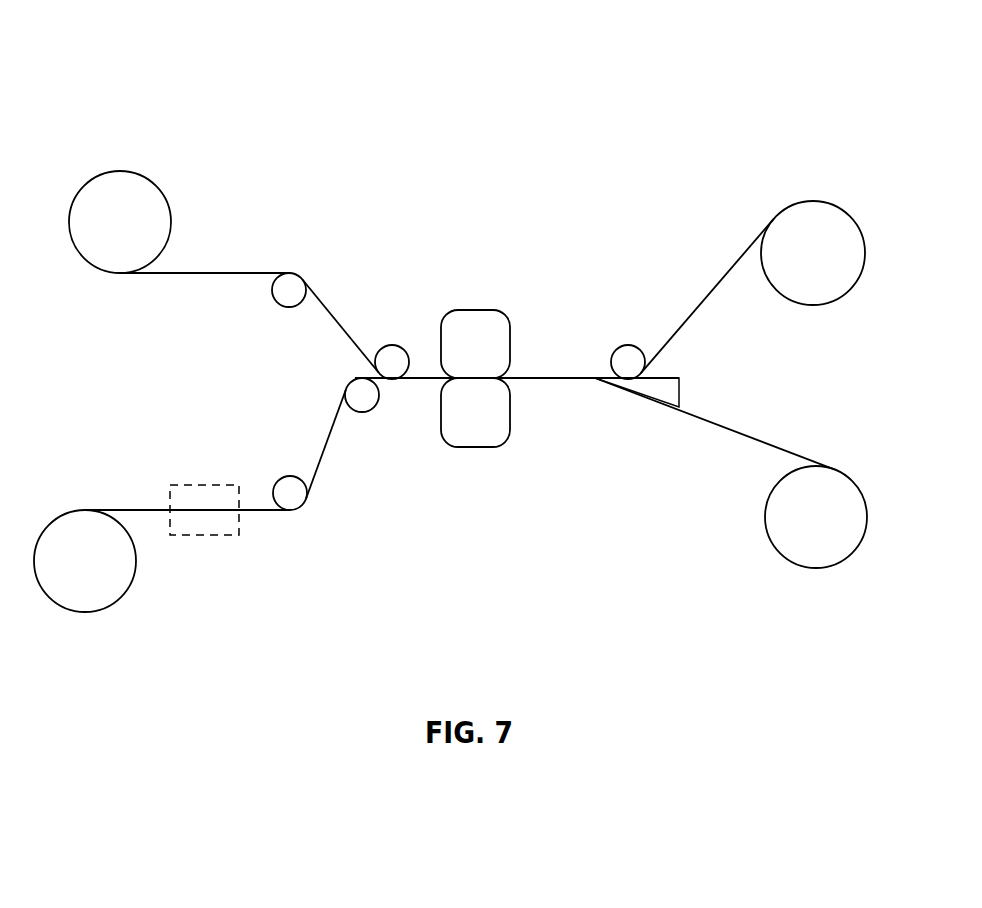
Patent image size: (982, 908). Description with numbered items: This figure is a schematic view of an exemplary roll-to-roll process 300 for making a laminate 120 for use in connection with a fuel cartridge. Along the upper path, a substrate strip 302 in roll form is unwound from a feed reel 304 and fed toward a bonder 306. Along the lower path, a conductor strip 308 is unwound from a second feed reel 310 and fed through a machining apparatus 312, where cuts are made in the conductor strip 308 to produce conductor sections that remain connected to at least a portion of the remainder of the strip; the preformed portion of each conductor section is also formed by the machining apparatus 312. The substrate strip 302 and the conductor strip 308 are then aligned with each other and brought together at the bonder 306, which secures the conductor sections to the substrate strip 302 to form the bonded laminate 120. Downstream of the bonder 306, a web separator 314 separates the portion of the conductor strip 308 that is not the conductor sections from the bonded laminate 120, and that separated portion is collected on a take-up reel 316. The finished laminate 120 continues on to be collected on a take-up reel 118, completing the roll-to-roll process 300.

The roll-to-roll process 300 is at (614, 62).
The feed reel 304 is at (165, 196).
The substrate strip 302 is at (245, 272).
The bonder 306 is at (475, 310).
The take-up roll 118 is at (783, 210).
The laminate 120 is at (707, 294).
The web separator 314 is at (680, 388).
The take-up reel 316 is at (765, 513).
The machining apparatus 312 is at (203, 483).
The feed reel 310 is at (118, 600).
The conductor strip 308 is at (324, 452).